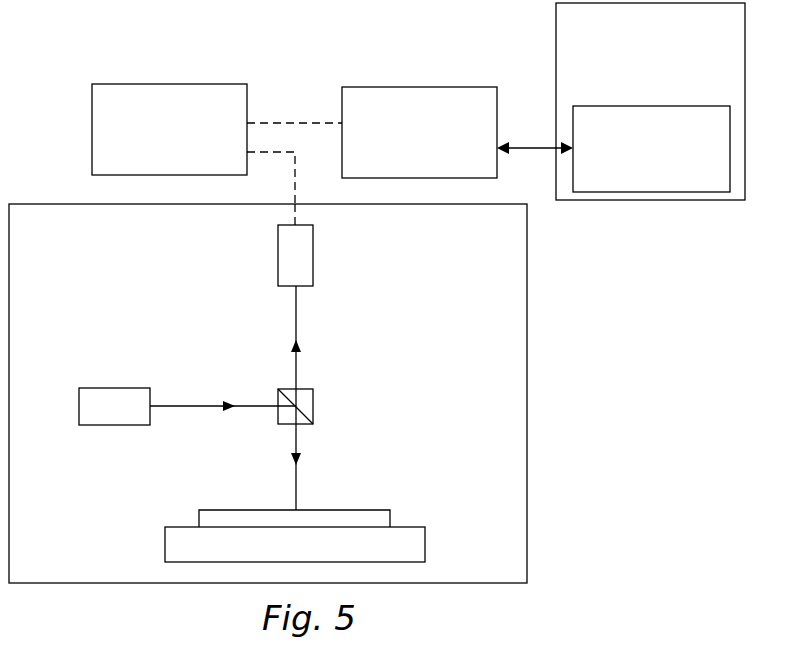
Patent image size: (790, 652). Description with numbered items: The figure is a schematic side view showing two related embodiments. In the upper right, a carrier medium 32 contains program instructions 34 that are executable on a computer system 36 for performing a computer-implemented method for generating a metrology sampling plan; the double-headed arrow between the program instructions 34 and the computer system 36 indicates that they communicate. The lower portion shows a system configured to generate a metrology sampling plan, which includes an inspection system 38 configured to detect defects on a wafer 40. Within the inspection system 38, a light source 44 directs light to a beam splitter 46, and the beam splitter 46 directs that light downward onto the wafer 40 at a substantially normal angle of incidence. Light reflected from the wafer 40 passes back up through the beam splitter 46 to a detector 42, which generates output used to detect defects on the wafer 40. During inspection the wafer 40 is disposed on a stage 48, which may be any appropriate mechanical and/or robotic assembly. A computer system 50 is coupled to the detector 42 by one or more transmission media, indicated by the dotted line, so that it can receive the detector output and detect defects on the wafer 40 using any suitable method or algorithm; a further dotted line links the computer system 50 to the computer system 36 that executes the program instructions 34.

The carrier medium 32 is at (650, 101).
The program instructions 34 is at (651, 149).
The computer system 36 is at (419, 132).
The inspection system 38 is at (527, 360).
The wafer 40 is at (390, 518).
The detector 42 is at (313, 255).
The light source 44 is at (95, 388).
The beam splitter 46 is at (313, 405).
The stage 48 is at (425, 545).
The computer system 50 is at (169, 129).